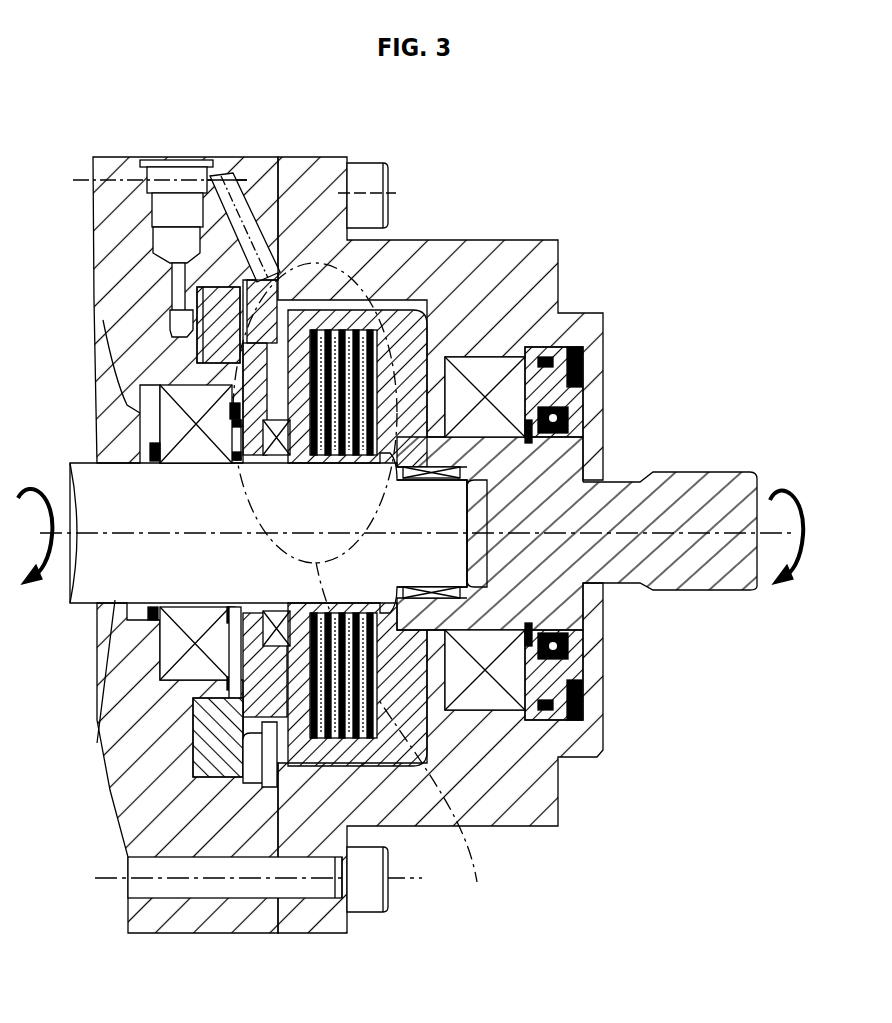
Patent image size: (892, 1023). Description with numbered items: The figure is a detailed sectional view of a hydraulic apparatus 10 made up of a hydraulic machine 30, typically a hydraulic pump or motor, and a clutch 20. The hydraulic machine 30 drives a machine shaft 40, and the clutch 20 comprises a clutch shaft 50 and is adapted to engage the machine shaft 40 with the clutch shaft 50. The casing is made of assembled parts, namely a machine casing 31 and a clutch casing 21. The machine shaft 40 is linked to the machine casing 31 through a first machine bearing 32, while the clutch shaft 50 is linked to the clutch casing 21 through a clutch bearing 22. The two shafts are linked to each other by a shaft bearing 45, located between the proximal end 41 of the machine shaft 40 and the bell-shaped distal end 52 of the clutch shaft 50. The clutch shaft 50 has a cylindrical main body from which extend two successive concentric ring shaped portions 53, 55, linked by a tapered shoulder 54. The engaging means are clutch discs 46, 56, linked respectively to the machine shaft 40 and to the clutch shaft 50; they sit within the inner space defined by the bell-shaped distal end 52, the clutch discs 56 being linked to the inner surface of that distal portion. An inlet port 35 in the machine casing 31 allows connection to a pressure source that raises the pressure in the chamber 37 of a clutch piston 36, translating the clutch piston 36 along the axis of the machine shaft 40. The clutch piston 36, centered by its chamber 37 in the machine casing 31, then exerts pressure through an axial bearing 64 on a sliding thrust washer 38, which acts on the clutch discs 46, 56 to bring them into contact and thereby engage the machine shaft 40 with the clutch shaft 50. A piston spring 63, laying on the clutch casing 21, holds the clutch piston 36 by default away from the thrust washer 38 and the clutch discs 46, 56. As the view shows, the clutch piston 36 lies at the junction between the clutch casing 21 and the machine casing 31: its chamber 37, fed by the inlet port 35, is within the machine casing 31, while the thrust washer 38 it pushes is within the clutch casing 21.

The hydraulic apparatus 10 is at (628, 218).
The clutch 20 is at (605, 137).
The hydraulic machine 30 is at (278, 137).
The clutch casing 21 is at (473, 260).
The clutch bearing 22 is at (480, 370).
The machine casing 31 is at (123, 230).
The first machine bearing 32 is at (170, 650).
The inlet port 35 is at (168, 185).
The clutch piston 36 is at (213, 343).
The chamber 37 is at (187, 303).
The thrust washer 38 is at (297, 697).
The machine shaft 40 is at (127, 490).
The proximal end 41 is at (433, 557).
The shaft bearing 45 is at (457, 467).
The clutch discs 46 is at (325, 352).
The clutch shaft 50 is at (710, 497).
The distal end 52 is at (527, 537).
The ring shaped portion 53 is at (435, 410).
The tapered shoulder 54 is at (453, 443).
The ring shaped portion 55 is at (347, 312).
The clutch discs 56 is at (413, 413).
The piston spring 63 is at (270, 757).
The axial bearing 64 is at (267, 637).